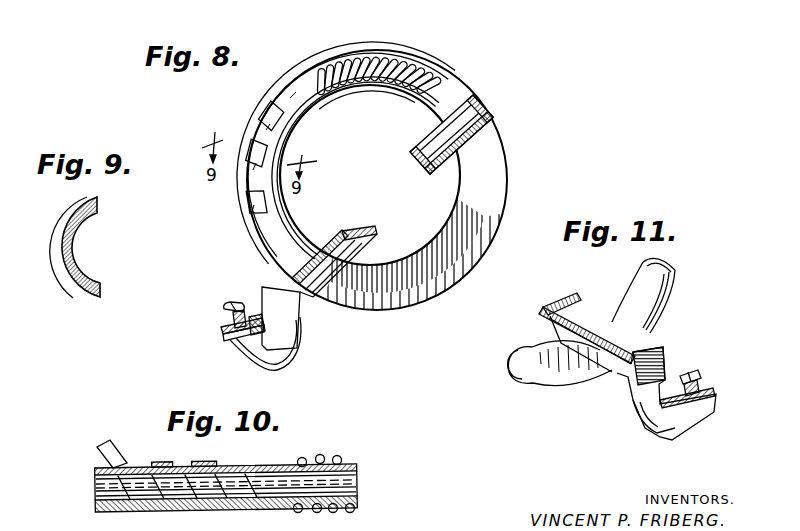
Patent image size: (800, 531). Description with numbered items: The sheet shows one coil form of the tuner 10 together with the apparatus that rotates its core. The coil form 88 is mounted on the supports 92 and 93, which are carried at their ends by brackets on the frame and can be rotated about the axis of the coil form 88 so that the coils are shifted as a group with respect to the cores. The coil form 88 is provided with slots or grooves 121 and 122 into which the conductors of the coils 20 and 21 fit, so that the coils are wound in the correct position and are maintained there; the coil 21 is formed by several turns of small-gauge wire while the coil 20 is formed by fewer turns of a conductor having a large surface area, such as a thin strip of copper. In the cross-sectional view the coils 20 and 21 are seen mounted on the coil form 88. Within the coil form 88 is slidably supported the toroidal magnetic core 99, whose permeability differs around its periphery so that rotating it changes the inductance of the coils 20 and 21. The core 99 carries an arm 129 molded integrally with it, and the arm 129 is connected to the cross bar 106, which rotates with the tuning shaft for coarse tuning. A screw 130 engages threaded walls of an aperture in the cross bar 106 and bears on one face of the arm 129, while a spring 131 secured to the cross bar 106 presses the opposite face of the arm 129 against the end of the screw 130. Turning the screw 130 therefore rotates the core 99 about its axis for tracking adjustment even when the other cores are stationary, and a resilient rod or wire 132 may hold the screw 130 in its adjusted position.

In FIG. 8, the ring 10 is at (351, 54).
In FIG. 8, the slots or grooves 121 is at (406, 62).
In FIG. 8, the slots or grooves 122 is at (272, 112).
In FIG. 9, the slots or grooves 122 is at (53, 240).
In FIG. 8, the coil form 88 is at (507, 172).
In FIG. 9, the coil form 88 is at (100, 297).
In FIG. 10, the coil form 88 is at (252, 476).
In FIG. 11, the coil form 88 is at (581, 374).
In FIG. 8, the support 92 is at (437, 176).
In FIG. 8, the support 93 is at (342, 229).
In FIG. 11, the support 93 is at (584, 307).
In FIG. 8, the arm 129 is at (274, 328).
In FIG. 8, the screw 130 is at (240, 306).
In FIG. 8, the spring 131 is at (294, 354).
In FIG. 8, the resilient rod or wire 132 is at (256, 316).
In FIG. 8, the cross bar 106 is at (222, 332).
In FIG. 11, the cross bar 106 is at (714, 391).
In FIG. 10, the coil 20 is at (107, 441).
In FIG. 10, the coil 21 is at (338, 457).
In FIG. 11, the toroidal magnetic core 99 is at (675, 270).